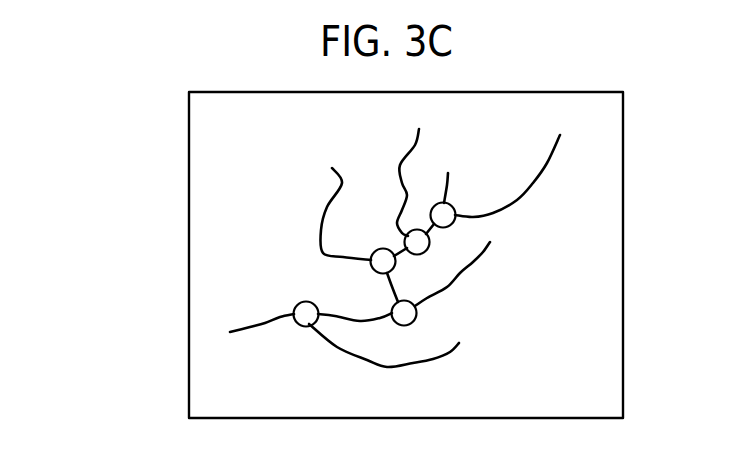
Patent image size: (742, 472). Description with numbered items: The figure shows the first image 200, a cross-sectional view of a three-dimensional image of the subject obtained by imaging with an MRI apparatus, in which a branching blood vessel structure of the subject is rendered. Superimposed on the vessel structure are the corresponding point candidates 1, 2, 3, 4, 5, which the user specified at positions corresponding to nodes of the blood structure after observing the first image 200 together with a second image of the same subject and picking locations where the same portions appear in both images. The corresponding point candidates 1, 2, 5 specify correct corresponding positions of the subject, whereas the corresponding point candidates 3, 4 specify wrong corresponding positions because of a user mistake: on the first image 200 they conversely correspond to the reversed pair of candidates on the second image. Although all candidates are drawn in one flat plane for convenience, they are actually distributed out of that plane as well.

The first image 200 is at (189, 142).
The corresponding point candidate 1 is at (306, 315).
The corresponding point candidate 2 is at (404, 314).
The corresponding point candidate 3 is at (383, 262).
The corresponding point candidate 4 is at (417, 243).
The corresponding point candidate 5 is at (443, 216).